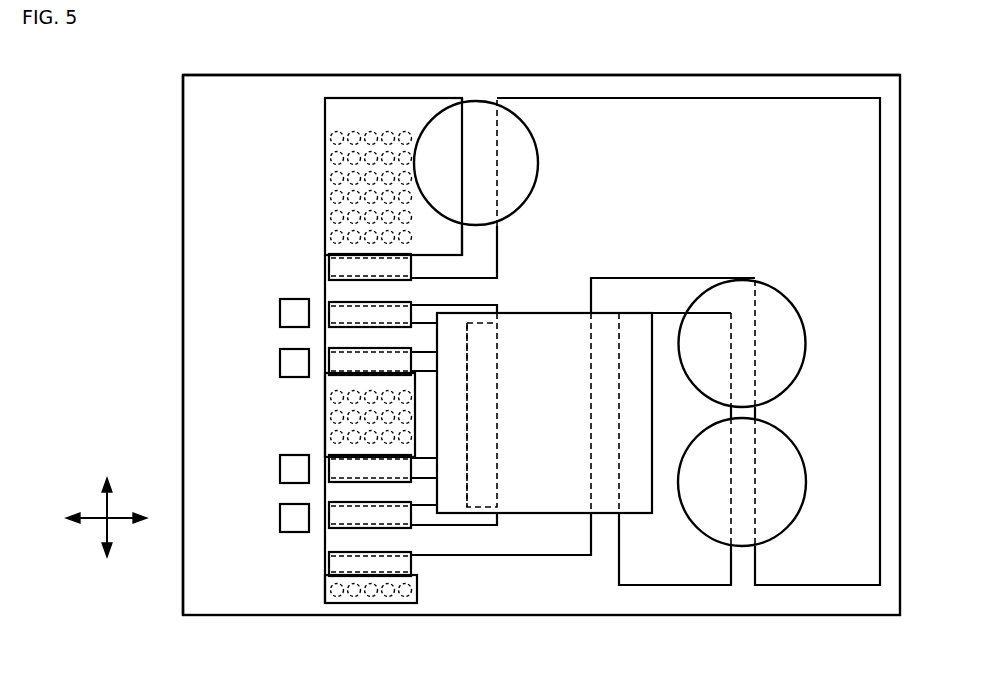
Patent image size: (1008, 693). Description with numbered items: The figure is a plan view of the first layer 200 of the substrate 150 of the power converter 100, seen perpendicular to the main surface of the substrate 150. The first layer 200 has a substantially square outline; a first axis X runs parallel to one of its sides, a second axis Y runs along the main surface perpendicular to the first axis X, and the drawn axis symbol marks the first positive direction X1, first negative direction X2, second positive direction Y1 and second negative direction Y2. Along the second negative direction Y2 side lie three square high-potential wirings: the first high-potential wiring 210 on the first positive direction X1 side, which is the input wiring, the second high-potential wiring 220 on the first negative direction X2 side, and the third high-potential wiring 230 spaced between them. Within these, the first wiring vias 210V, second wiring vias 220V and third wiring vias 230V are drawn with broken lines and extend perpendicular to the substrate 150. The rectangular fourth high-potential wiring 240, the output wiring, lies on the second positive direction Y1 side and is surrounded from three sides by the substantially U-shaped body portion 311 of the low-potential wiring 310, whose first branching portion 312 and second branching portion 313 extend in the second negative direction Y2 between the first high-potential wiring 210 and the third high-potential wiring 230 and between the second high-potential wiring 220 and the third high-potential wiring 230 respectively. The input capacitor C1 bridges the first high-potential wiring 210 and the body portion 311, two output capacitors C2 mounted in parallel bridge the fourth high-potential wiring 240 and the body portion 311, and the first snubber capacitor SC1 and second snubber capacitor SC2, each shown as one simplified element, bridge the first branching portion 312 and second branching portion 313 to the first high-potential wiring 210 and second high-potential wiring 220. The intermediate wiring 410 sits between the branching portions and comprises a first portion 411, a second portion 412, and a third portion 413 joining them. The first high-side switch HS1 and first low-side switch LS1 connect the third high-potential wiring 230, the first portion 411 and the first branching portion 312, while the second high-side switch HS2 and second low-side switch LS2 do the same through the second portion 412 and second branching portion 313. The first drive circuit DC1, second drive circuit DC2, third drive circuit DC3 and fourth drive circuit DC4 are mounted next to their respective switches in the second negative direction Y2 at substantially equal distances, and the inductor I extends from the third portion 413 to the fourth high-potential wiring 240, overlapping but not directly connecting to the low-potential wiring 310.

The power converter 100 is at (152, 256).
The substrate 150 is at (176, 130).
The first layer 200 is at (472, 100).
The first high-potential wiring 210 is at (325, 115).
The first wiring vias 210V is at (370, 130).
The input capacitor C1 is at (475, 101).
The body portion 311 is at (655, 98).
The first branching portion 312 is at (329, 304).
The second branching portion 313 is at (329, 565).
The low-potential wiring 310 is at (818, 587).
The first snubber capacitor SC1 is at (329, 268).
The second snubber capacitor SC2 is at (329, 578).
The first drive circuit DC1 is at (280, 359).
The second drive circuit DC2 is at (280, 312).
The third drive circuit DC3 is at (280, 472).
The fourth drive circuit DC4 is at (280, 517).
The first portion 411 is at (329, 345).
The second portion 412 is at (329, 488).
The third portion 413 is at (470, 398).
The intermediate wiring 410 is at (482, 506).
The third high-potential wiring 230 is at (325, 388).
The third wiring vias 230V is at (331, 413).
The second high-potential wiring 220 is at (392, 605).
The second wiring vias 220V is at (355, 600).
The fourth high-potential wiring 240 is at (676, 587).
The output capacitor C2 is at (752, 281).
The first low-side switch LS1 is at (413, 318).
The first high-side switch HS1 is at (413, 356).
The second high-side switch HS2 is at (413, 470).
The second low-side switch LS2 is at (413, 494).
The inductor I is at (600, 300).
The first axis X is at (104, 502).
The second axis Y is at (120, 523).
The first positive direction X1 is at (108, 462).
The first negative direction X2 is at (106, 579).
The second positive direction Y1 is at (164, 520).
The second negative direction Y2 is at (49, 520).